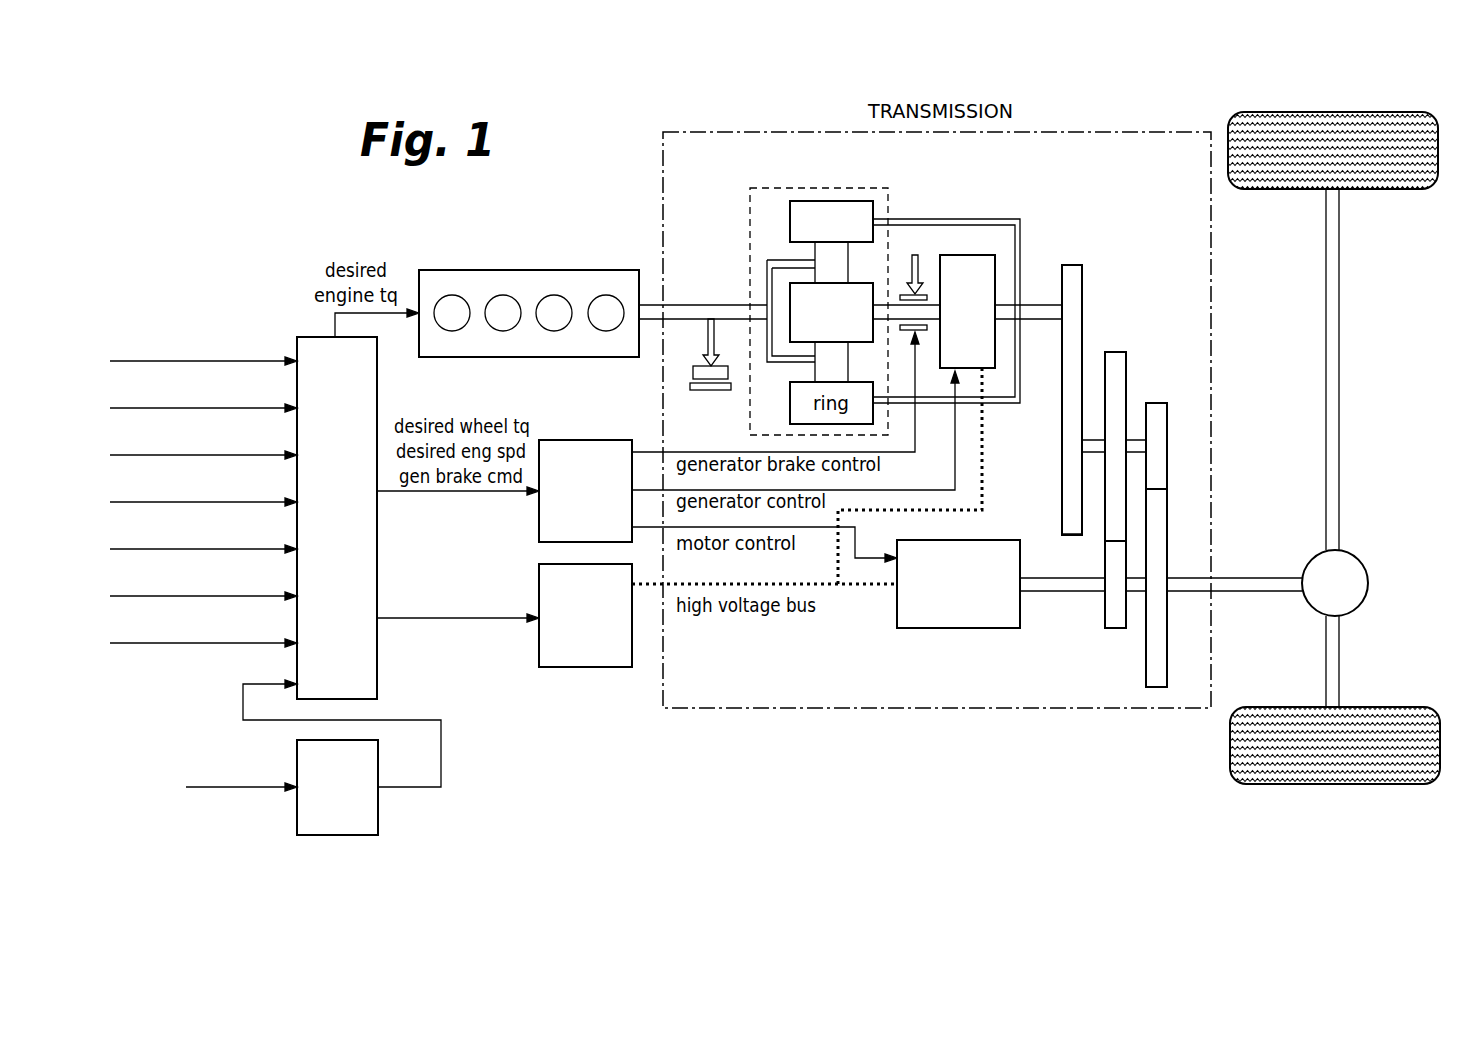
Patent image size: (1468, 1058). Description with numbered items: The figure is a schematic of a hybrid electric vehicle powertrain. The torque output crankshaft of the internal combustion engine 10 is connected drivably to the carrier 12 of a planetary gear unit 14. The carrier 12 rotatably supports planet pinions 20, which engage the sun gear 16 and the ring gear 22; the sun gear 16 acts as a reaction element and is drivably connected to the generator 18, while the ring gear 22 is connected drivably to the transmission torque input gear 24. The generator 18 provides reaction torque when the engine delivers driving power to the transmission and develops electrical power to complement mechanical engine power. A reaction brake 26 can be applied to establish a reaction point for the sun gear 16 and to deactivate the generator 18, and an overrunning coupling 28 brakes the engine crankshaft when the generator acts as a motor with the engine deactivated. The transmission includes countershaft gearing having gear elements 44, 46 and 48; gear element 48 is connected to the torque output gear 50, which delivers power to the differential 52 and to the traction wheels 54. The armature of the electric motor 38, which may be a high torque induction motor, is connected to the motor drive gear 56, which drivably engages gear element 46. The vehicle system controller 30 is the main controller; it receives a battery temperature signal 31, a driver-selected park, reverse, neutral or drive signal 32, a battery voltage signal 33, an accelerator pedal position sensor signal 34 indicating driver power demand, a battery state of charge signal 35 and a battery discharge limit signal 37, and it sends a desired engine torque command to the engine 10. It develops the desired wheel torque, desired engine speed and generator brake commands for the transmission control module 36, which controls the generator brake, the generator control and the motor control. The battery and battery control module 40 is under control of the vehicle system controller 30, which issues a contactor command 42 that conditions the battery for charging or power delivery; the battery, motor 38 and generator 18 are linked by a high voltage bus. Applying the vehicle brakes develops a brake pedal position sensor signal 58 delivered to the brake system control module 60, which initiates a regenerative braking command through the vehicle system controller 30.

The internal combustion engine 10 is at (562, 357).
The carrier 12 is at (773, 258).
The planetary gear unit 14 is at (871, 180).
The sun gear 16 is at (796, 344).
The generator 18 is at (995, 265).
The planet pinions 20 is at (812, 268).
The ring gear 22 is at (790, 212).
The transmission torque input gear 24 is at (158, 363).
The reaction brake 26 is at (921, 294).
The overrunning coupling 28 is at (693, 371).
The vehicle system controller 30 is at (377, 540).
The battery temperature signal 31 is at (158, 410).
The driver-selected signal 32 is at (158, 457).
The battery voltage signal 33 is at (158, 504).
The accelerator pedal position sensor signal 34 is at (158, 551).
The battery state of charge signal 35 is at (158, 598).
The transmission control module 36 is at (588, 440).
The battery discharge limit signal 37 is at (158, 645).
The electric motor 38 is at (965, 628).
The battery and battery control module 40 is at (583, 667).
The battery control module contactor command 42 is at (418, 620).
The gear element 44 is at (1062, 478).
The gear element 46 is at (1126, 378).
The gear element 48 is at (1167, 432).
The torque output gear 50 is at (1146, 652).
The differential 52 is at (1316, 564).
The traction wheels 54 is at (1360, 112).
The motor drive gear 56 is at (1105, 610).
The brake pedal position sensor signal 58 is at (235, 788).
The brake system control module 60 is at (297, 758).